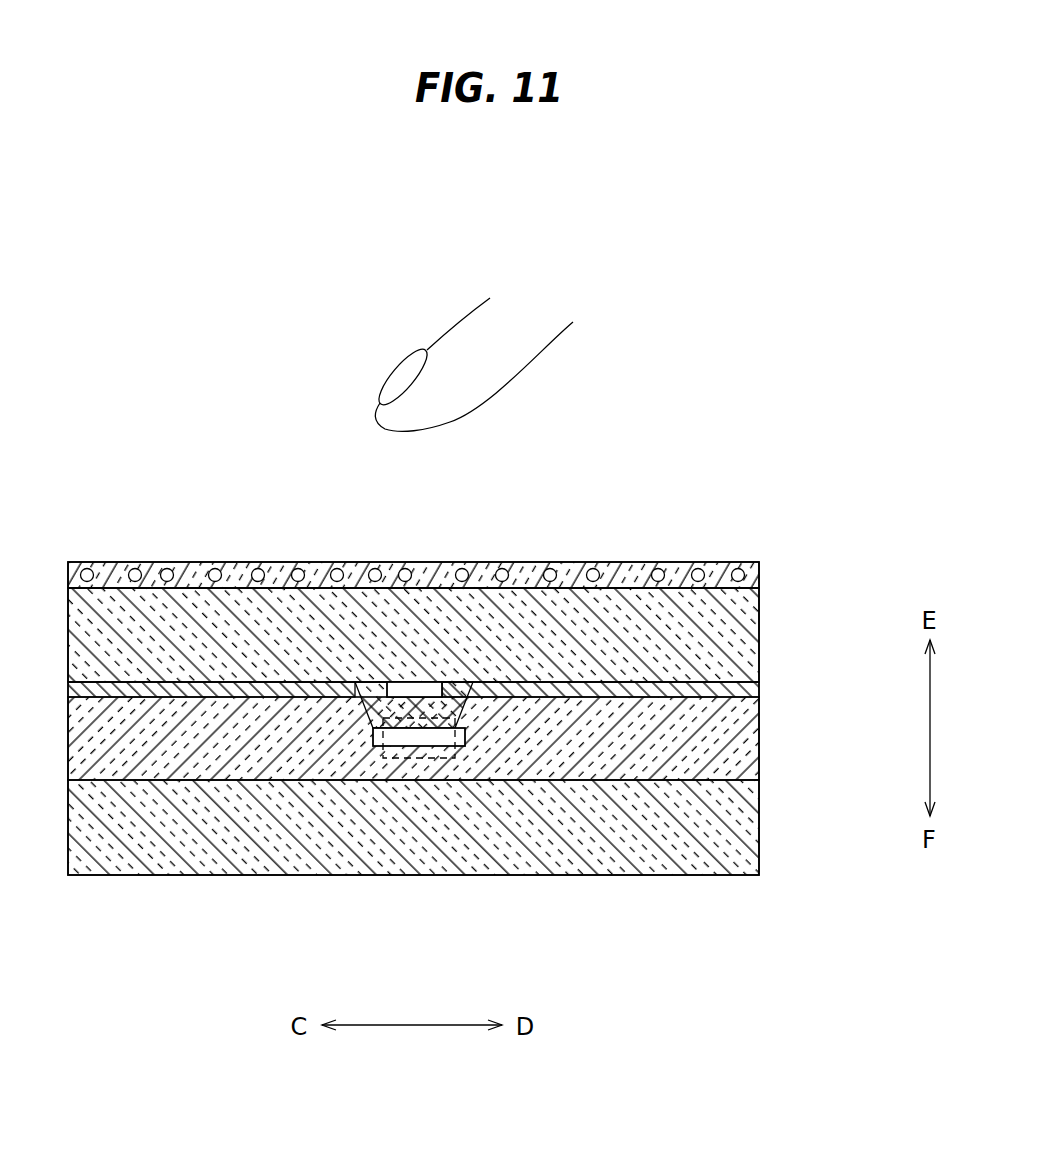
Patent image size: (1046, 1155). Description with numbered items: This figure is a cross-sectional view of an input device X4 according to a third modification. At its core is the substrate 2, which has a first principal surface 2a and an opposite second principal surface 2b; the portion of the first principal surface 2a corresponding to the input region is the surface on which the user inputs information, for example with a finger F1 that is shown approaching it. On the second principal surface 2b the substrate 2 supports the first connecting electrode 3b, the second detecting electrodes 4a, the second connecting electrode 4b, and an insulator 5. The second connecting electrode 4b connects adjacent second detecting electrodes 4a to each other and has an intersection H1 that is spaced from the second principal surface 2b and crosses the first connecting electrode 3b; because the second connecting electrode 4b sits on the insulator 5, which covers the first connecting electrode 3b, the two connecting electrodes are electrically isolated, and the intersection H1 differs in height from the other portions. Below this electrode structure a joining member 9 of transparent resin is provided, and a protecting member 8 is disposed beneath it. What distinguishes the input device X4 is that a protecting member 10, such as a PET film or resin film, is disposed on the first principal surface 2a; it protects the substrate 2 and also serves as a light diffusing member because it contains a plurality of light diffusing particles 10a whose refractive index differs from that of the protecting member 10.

The input device X4 is at (771, 409).
The substrate 2 is at (759, 634).
The first principal surface 2a is at (711, 590).
The second principal surface 2b is at (713, 681).
The first connecting electrode 3b is at (420, 682).
The second detecting electrodes 4a is at (215, 688).
The second connecting electrode 4b is at (418, 746).
The insulator 5 is at (460, 720).
The protecting member 8 is at (758, 826).
The joining member 9 is at (758, 739).
The protecting member 10 is at (526, 563).
The light diffusing particles 10a is at (298, 569).
The finger F1 is at (450, 338).
The intersection H1 is at (448, 758).